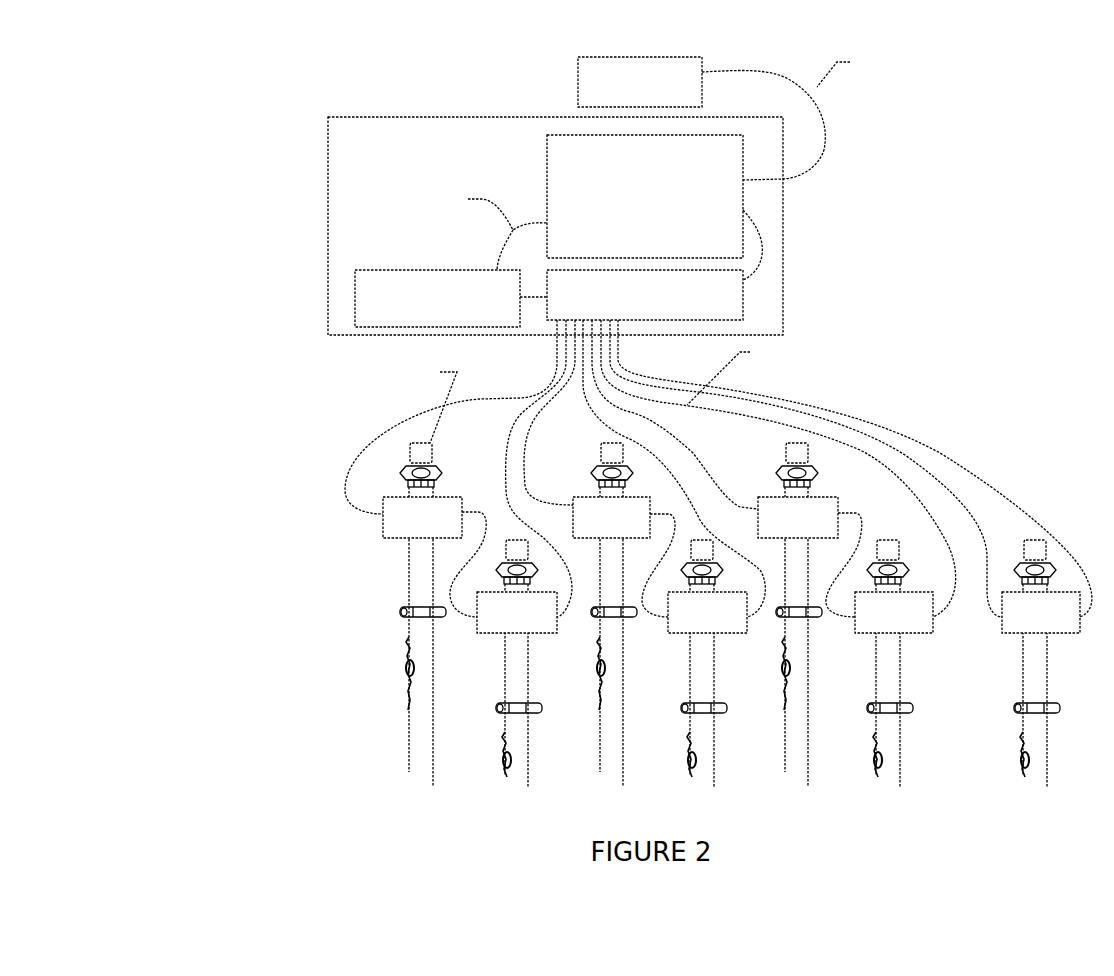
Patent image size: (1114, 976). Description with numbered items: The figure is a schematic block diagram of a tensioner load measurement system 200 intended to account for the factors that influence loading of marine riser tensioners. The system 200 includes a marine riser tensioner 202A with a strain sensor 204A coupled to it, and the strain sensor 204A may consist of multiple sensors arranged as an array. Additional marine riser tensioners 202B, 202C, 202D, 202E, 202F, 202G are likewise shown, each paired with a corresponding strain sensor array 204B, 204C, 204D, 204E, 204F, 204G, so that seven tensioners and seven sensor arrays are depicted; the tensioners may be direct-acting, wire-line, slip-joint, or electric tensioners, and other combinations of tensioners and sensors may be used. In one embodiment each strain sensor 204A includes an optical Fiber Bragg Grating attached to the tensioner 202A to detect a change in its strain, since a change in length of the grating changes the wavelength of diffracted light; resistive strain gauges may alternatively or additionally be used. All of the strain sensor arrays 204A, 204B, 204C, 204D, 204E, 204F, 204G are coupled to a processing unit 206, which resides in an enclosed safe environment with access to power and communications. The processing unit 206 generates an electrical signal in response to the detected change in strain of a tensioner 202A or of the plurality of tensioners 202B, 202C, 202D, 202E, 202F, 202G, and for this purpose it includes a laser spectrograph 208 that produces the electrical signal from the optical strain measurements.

The tensioner load measurement system 200 is at (230, 72).
The marine riser tensioner 202A is at (412, 773).
The marine riser tensioner 202B is at (508, 773).
The marine riser tensioner 202C is at (596, 773).
The marine riser tensioner 202D is at (691, 773).
The marine riser tensioner 202E is at (784, 773).
The marine riser tensioner 202F is at (873, 773).
The marine riser tensioner 202G is at (1022, 773).
The strain sensor 204A is at (398, 540).
The strain sensor 204B is at (492, 640).
The strain sensor 204C is at (581, 492).
The strain sensor 204D is at (684, 640).
The strain sensor 204E is at (772, 493).
The strain sensor 204F is at (869, 640).
The strain sensor 204G is at (1011, 640).
The processing unit 206 is at (797, 213).
The laser spectrograph 208 is at (747, 300).